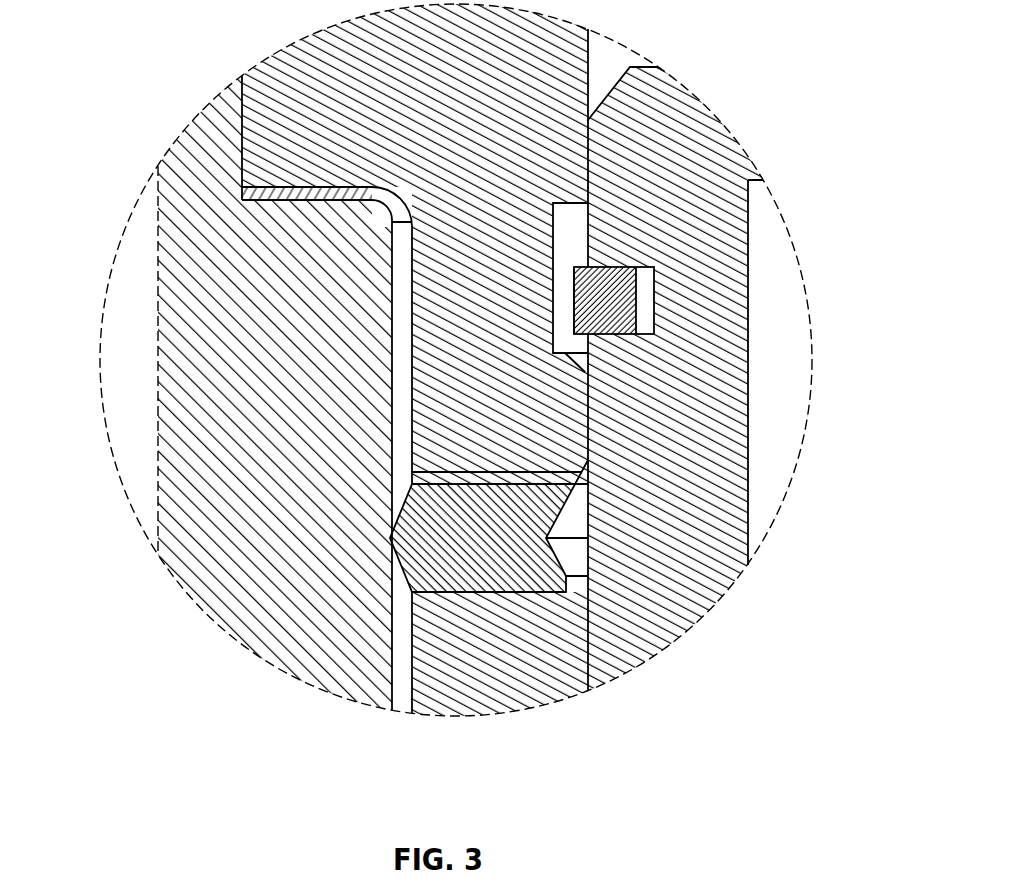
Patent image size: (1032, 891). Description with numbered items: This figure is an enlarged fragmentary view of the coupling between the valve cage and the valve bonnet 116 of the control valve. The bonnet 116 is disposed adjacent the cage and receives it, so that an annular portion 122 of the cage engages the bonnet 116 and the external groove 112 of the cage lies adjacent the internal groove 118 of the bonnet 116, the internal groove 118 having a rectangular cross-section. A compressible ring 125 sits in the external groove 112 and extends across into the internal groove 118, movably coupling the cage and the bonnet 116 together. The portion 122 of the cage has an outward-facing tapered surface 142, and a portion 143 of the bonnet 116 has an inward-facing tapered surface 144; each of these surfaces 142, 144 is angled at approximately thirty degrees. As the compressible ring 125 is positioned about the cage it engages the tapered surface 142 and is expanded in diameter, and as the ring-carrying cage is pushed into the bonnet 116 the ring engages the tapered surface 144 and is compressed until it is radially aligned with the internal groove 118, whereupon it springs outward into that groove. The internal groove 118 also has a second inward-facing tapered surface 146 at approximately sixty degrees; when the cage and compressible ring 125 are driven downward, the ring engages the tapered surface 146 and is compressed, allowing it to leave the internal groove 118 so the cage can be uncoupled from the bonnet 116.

The external groove 112 is at (657, 282).
The bonnet 116 is at (275, 73).
The internal groove 118 is at (556, 296).
The portion of the cage 122 is at (732, 352).
The compressible ring 125 is at (622, 317).
The outward-facing tapered surface 142 is at (605, 105).
The portion of the bonnet 143 is at (545, 396).
The inward-facing tapered surface 144 is at (590, 472).
The second inward-facing tapered surface 146 is at (583, 370).